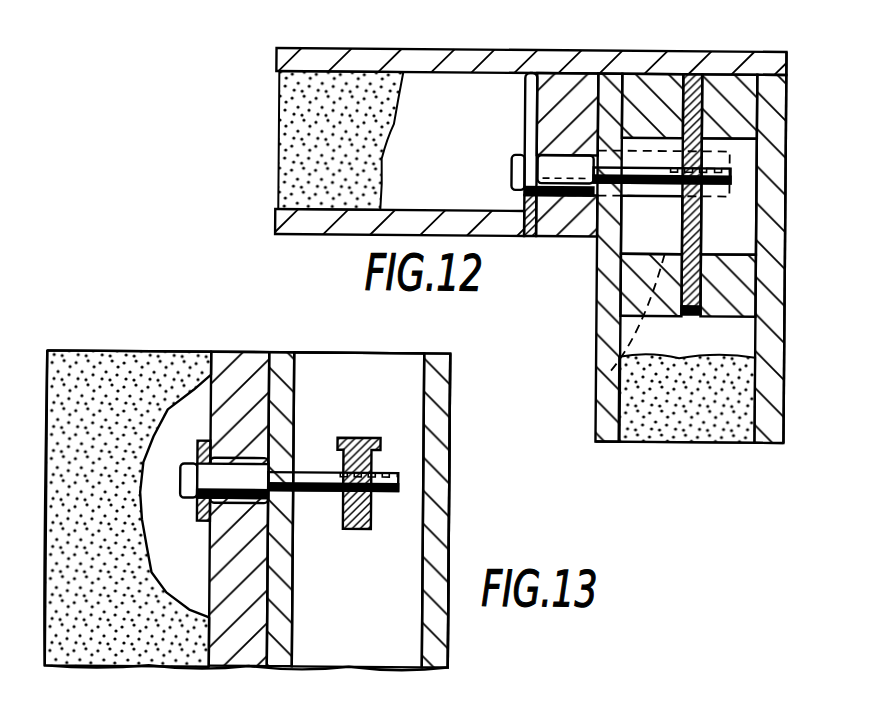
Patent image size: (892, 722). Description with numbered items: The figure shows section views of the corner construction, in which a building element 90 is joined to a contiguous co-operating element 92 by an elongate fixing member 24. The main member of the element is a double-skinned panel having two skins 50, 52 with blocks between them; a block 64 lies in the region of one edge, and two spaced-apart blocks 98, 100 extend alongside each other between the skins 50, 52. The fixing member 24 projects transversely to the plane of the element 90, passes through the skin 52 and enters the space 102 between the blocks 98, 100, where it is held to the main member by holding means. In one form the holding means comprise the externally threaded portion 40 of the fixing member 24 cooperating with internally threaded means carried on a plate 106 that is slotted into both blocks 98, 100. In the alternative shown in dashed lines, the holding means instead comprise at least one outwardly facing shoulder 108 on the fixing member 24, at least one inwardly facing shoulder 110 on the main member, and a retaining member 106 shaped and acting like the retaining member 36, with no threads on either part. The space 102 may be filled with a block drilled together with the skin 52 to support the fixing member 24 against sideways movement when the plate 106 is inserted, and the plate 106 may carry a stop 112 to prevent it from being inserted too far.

In FIG. 12, the fixing member 24 is at (559, 172).
In FIG. 13, the fixing member 24 is at (212, 433).
In FIG. 12, the retaining member 36 is at (524, 120).
In FIG. 13, the retaining member 36 is at (197, 515).
In FIG. 12, the externally threaded portion 40 is at (730, 178).
In FIG. 12, the skin 50 is at (505, 62).
In FIG. 13, the skin 50 is at (451, 389).
In FIG. 12, the skin 52 is at (322, 238).
In FIG. 13, the skin 52 is at (287, 358).
In FIG. 12, the block 64 is at (575, 100).
In FIG. 13, the block 64 is at (252, 385).
In FIG. 12, the building element 90 is at (785, 312).
In FIG. 13, the building element 90 is at (451, 536).
In FIG. 12, the co-operating element 92 is at (378, 51).
In FIG. 13, the co-operating element 92 is at (165, 351).
In FIG. 12, the block 98 is at (717, 292).
In FIG. 12, the block 100 is at (733, 92).
In FIG. 13, the block 100 is at (326, 397).
In FIG. 12, the space 102 is at (643, 135).
In FIG. 13, the space 102 is at (407, 366).
In FIG. 12, the plate 106 is at (701, 228).
In FIG. 13, the plate 106 is at (357, 530).
In FIG. 12, the outwardly facing shoulder 108 is at (740, 121).
In FIG. 12, the inwardly facing shoulder 110 is at (693, 140).
In FIG. 12, the stop 112 is at (612, 370).
In FIG. 13, the stop 112 is at (340, 440).